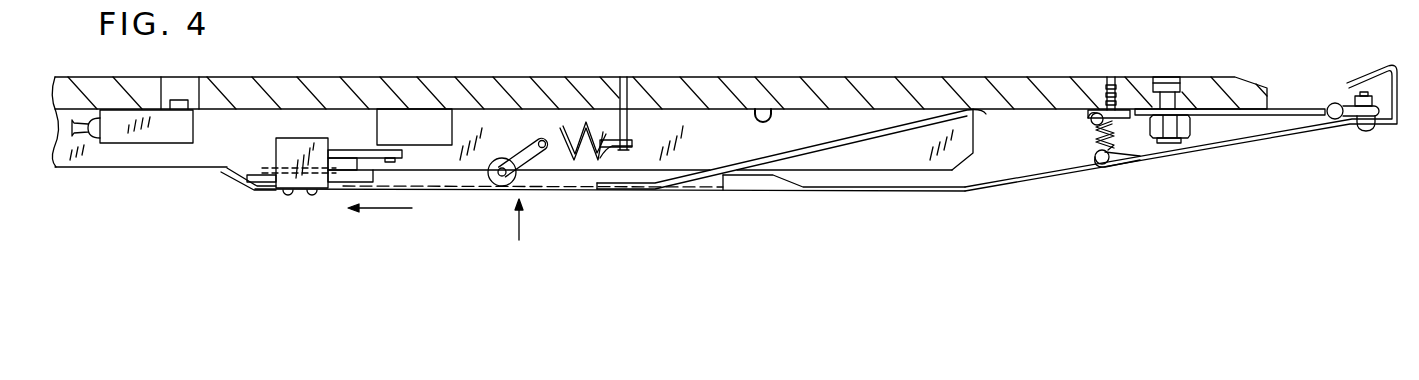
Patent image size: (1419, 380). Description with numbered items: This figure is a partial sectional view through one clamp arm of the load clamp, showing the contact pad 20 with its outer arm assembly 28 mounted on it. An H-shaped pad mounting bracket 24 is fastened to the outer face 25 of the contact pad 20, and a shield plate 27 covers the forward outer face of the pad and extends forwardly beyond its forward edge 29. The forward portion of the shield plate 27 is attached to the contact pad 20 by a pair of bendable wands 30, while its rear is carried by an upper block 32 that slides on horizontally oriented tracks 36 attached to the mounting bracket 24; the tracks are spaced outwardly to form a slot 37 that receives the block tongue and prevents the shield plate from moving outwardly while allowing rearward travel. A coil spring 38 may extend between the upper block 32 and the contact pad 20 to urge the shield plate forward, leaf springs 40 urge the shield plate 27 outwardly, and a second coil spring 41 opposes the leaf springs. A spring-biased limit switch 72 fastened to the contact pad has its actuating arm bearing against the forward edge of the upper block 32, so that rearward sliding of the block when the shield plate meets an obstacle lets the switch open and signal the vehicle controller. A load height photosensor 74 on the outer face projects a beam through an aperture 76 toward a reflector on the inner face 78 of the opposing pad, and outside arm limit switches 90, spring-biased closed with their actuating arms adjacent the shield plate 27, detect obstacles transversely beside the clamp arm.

The contact pad 20 is at (352, 72).
The pad mounting bracket 24 is at (99, 170).
The outer face 25 is at (773, 108).
The shield plate 27 is at (461, 191).
The outer arm assembly 28 is at (1046, 179).
The forward edge 29 is at (1262, 88).
The bendable wands 30 is at (1303, 108).
The upper block 32 is at (275, 146).
The tracks 36 is at (339, 190).
The slot 37 is at (224, 172).
The coil spring 38 is at (576, 128).
The leaf springs 40 is at (883, 129).
The second coil spring 41 is at (1098, 160).
The limit switch 72 is at (414, 127).
The load height photosensor 74 is at (113, 110).
The aperture 76 is at (198, 79).
The inner face 78 is at (688, 78).
The outside arm limit switches 90 is at (525, 134).